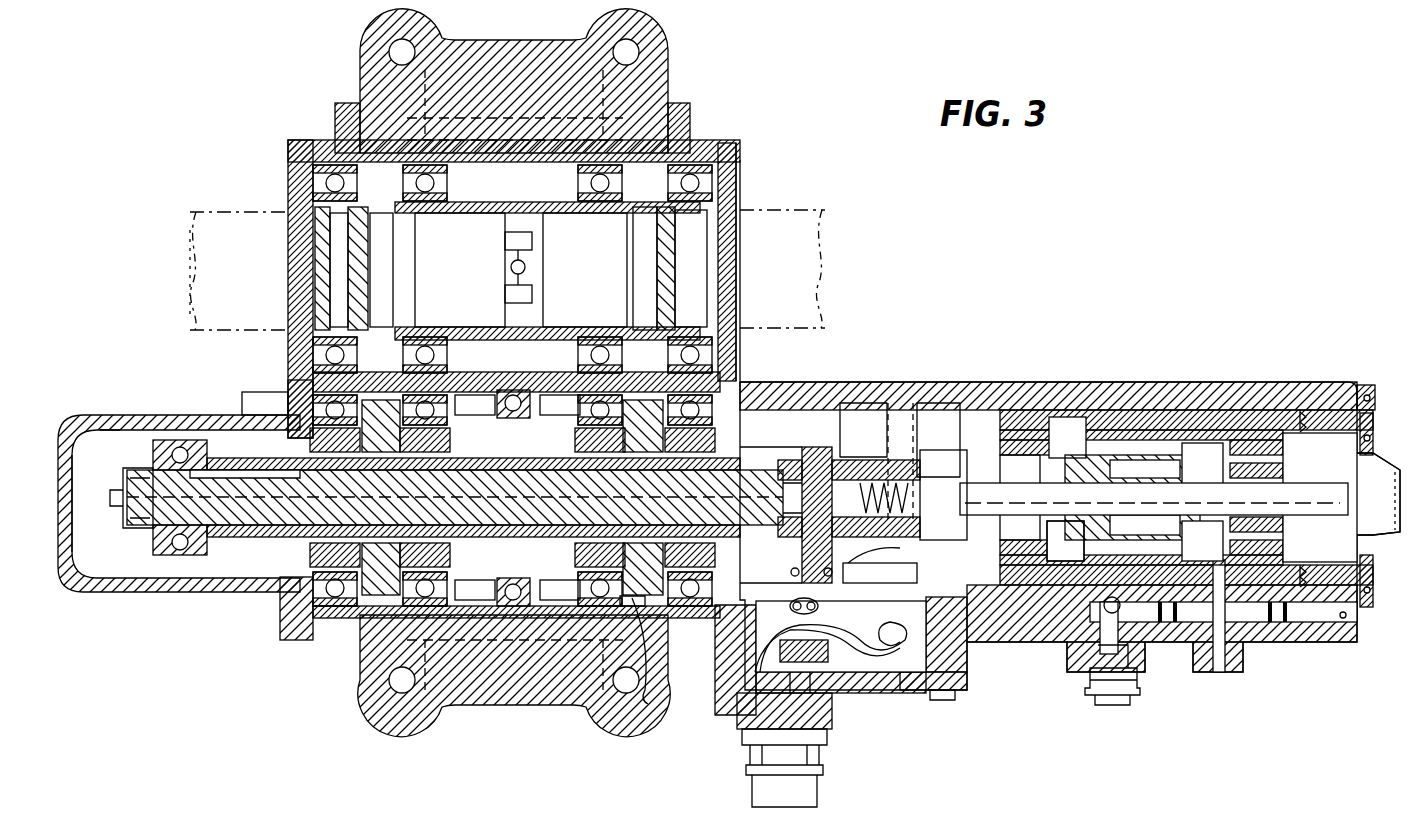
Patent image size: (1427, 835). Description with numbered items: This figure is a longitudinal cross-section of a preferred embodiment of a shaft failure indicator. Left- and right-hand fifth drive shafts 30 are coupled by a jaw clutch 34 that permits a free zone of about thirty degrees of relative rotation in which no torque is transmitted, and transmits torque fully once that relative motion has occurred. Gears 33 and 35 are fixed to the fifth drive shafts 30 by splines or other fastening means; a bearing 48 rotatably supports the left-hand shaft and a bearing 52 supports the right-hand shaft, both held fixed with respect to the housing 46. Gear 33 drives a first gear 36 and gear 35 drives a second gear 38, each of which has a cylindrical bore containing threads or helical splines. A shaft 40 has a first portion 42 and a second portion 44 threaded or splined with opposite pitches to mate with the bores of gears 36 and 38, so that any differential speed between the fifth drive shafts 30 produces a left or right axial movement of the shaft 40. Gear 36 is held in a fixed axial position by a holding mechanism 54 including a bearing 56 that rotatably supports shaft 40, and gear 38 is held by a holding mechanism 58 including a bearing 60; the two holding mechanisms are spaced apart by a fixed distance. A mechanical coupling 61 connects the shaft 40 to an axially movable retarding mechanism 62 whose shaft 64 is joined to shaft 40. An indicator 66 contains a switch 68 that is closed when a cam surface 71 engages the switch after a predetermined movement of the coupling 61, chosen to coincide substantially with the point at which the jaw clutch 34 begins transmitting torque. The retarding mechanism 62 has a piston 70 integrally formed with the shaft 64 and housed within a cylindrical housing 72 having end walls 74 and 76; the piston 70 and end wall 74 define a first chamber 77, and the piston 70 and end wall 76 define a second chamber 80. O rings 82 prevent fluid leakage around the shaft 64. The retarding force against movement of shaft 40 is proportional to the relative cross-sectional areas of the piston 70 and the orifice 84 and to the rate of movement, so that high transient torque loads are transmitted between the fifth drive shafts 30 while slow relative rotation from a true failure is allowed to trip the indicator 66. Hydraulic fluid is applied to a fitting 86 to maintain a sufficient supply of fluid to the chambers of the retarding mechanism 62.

The fifth drive shafts 30 is at (235, 205).
The gear 33 is at (335, 140).
The jaw clutch 34 is at (485, 268).
The gear 35 is at (690, 118).
The first gear 36 is at (360, 665).
The second gear 38 is at (648, 704).
The shaft 40 is at (270, 485).
The first portion 42 is at (205, 585).
The second portion 44 is at (705, 490).
The housing 46 is at (290, 148).
The bearing 48 is at (290, 355).
The bearing 52 is at (740, 148).
The holding mechanism 54 is at (300, 410).
The bearing 56 is at (280, 632).
The holding mechanism 58 is at (728, 430).
The bearing 60 is at (740, 385).
The mechanical coupling 61 is at (826, 440).
The retarding mechanism 62 is at (1180, 437).
The shaft 64 is at (965, 495).
The indicator 66 is at (926, 608).
The switch 68 is at (745, 625).
The piston 70 is at (1175, 492).
The cam surface 71 is at (880, 580).
The cylindrical housing 72 is at (1160, 430).
The end wall 74 is at (1070, 455).
The end wall 76 is at (1255, 462).
The first chamber 77 is at (1095, 470).
The second chamber 80 is at (1200, 383).
The O rings 82 is at (1030, 520).
The orifice 84 is at (1110, 530).
The fitting 86 is at (1115, 700).